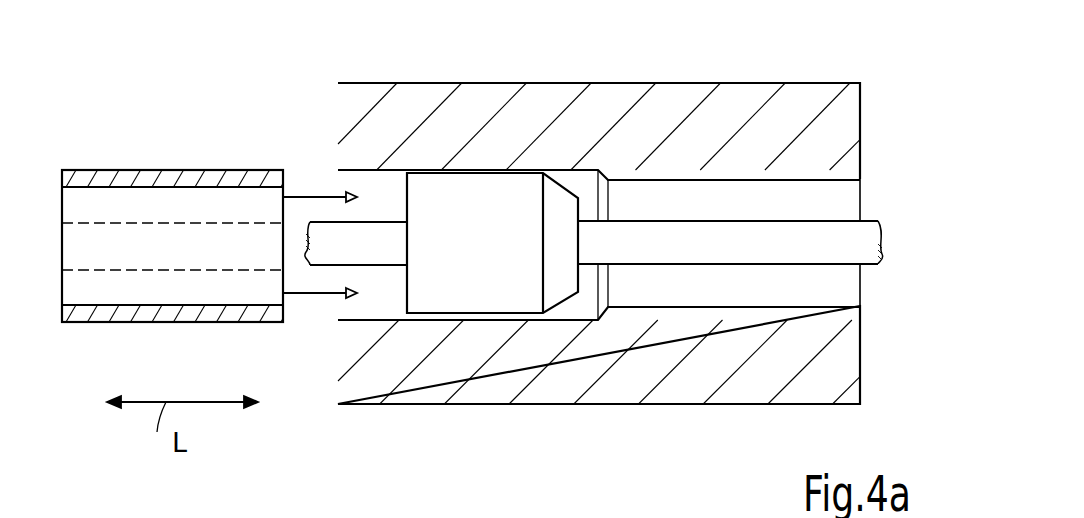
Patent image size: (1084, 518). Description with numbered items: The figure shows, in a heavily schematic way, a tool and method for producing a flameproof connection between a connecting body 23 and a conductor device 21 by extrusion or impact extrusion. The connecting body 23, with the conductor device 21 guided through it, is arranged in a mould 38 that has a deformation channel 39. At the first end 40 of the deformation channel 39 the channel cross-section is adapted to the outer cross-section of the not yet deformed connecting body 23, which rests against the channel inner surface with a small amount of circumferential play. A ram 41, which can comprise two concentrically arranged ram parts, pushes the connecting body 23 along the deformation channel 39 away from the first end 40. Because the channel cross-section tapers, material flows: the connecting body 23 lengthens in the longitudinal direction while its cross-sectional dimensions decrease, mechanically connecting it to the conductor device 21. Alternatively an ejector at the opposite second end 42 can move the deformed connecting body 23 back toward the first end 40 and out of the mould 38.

The conductor device 21 is at (863, 235).
The connecting body 23 is at (505, 303).
The mould 38 is at (792, 104).
The deformation channel 39 is at (668, 195).
The first end 40 is at (337, 178).
The ram 41 is at (183, 170).
The second end 42 is at (862, 277).